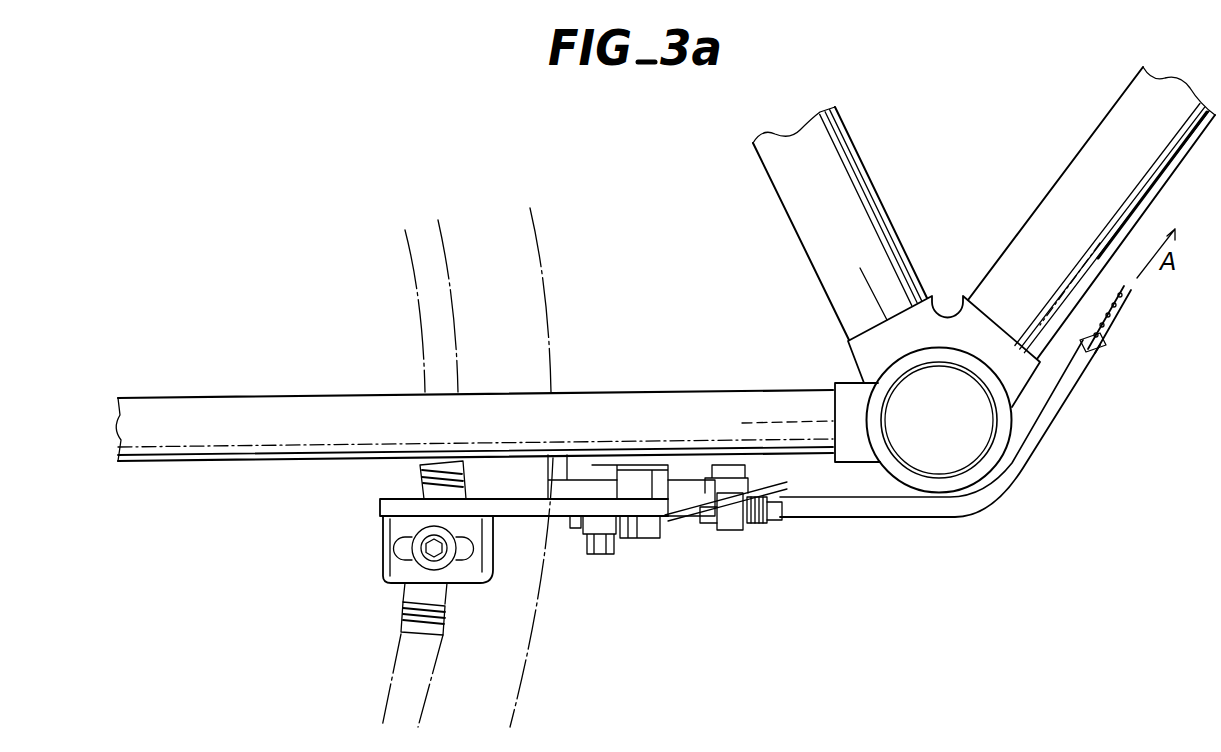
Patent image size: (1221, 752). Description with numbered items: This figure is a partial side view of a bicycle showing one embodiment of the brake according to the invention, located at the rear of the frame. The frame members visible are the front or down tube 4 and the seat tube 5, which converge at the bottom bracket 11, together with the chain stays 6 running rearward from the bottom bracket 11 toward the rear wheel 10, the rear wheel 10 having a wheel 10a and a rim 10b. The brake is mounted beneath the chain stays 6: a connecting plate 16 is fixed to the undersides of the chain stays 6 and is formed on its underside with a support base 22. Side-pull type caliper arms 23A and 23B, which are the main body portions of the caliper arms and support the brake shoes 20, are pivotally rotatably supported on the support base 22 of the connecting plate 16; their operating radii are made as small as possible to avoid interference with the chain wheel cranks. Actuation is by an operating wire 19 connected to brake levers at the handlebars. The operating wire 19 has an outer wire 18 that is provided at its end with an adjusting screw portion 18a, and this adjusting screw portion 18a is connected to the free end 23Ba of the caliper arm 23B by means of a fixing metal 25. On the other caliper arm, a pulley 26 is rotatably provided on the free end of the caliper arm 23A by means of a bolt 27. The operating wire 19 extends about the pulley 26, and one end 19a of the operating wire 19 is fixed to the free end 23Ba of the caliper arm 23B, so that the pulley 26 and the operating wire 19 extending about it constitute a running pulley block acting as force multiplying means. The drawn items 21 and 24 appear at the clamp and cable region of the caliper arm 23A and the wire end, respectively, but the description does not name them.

The front or down tube 4 is at (1170, 183).
The seat tube 5 is at (852, 165).
The chain stays 6 is at (176, 398).
The rear wheel 10 is at (492, 448).
The wheel 10a is at (527, 278).
The rim 10b is at (425, 368).
The bottom bracket 11 is at (1010, 460).
The connecting plate 16 is at (617, 465).
The outer wire 18 is at (965, 519).
The adjusting screw portion 18a is at (764, 523).
The operating wire 19 is at (1108, 320).
The one end of the operating wire 19a is at (703, 485).
The brake shoes 20 is at (402, 613).
The bolt 21 is at (420, 560).
The support base 22 is at (665, 540).
The caliper arm 23A is at (380, 503).
The caliper arm 23B is at (571, 455).
The free end of caliper arm 23B 23Ba is at (762, 480).
The cable end 24 is at (645, 540).
The fixing metal 25 is at (740, 532).
The pulley 26 is at (567, 518).
The bolt 27 is at (603, 556).